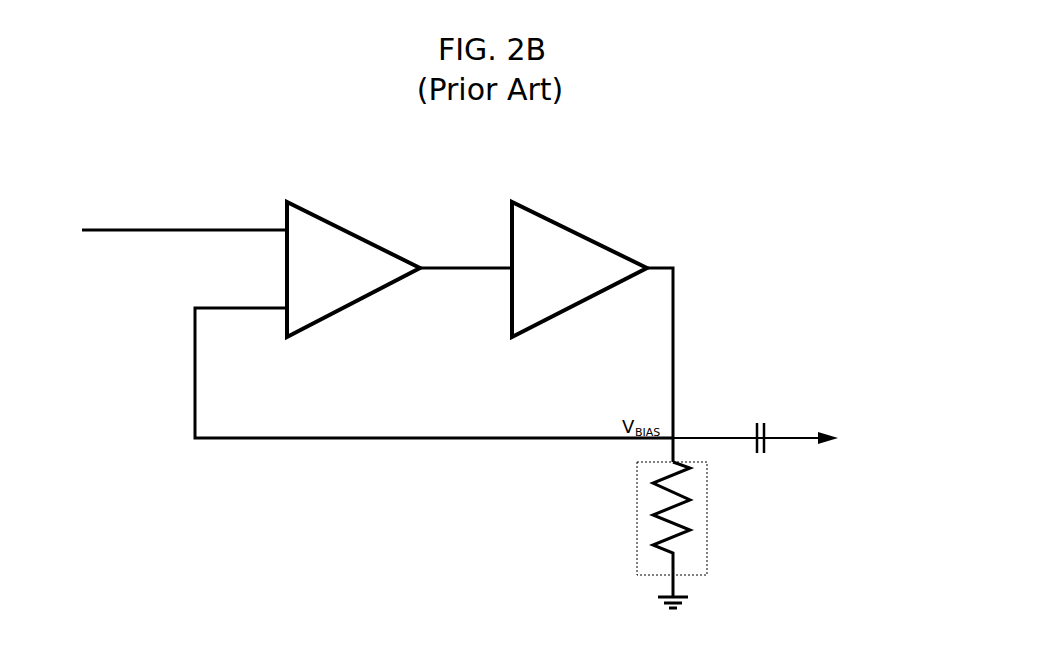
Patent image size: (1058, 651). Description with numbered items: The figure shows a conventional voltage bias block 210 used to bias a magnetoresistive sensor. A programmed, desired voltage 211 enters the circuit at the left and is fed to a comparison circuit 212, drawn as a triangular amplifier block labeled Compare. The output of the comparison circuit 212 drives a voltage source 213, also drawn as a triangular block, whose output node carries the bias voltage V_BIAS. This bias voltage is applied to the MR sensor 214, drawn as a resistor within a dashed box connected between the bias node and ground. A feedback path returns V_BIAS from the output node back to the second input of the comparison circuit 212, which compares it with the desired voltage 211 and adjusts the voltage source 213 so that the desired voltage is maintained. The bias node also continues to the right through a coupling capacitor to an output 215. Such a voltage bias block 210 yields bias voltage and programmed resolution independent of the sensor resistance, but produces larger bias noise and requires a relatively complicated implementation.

The voltage bias block 210 is at (724, 148).
The desired (programmed) voltage 211 is at (177, 228).
The comparison circuit 212 is at (357, 234).
The voltage source 213 is at (580, 230).
The MR sensor 214 is at (707, 547).
The output / coupling capacitor line 215 is at (800, 442).